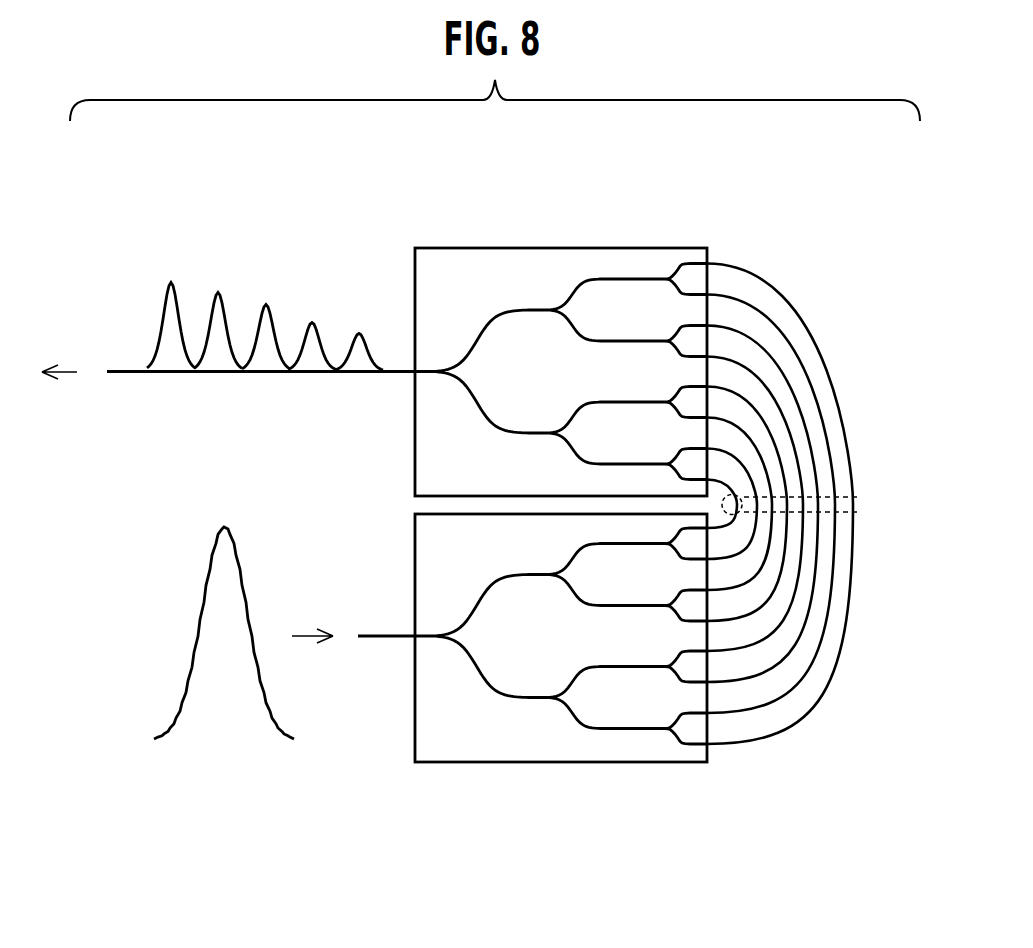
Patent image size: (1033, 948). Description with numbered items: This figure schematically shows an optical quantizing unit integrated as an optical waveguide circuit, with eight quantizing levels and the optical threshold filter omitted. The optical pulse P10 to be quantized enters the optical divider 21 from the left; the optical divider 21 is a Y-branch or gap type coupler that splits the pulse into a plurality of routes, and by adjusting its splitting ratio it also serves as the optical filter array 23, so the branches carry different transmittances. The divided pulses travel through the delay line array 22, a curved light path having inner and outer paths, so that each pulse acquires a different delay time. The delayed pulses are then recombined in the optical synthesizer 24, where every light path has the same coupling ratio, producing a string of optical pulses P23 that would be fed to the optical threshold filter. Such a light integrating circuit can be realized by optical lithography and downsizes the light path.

The optical synthesizer 24 is at (488, 248).
The optical divider 21 is at (561, 672).
The optical filter array 23 is at (490, 762).
The delay line array 22 is at (860, 506).
The optical pulses P23 is at (273, 322).
The optical pulse to be quantized P10 is at (254, 741).